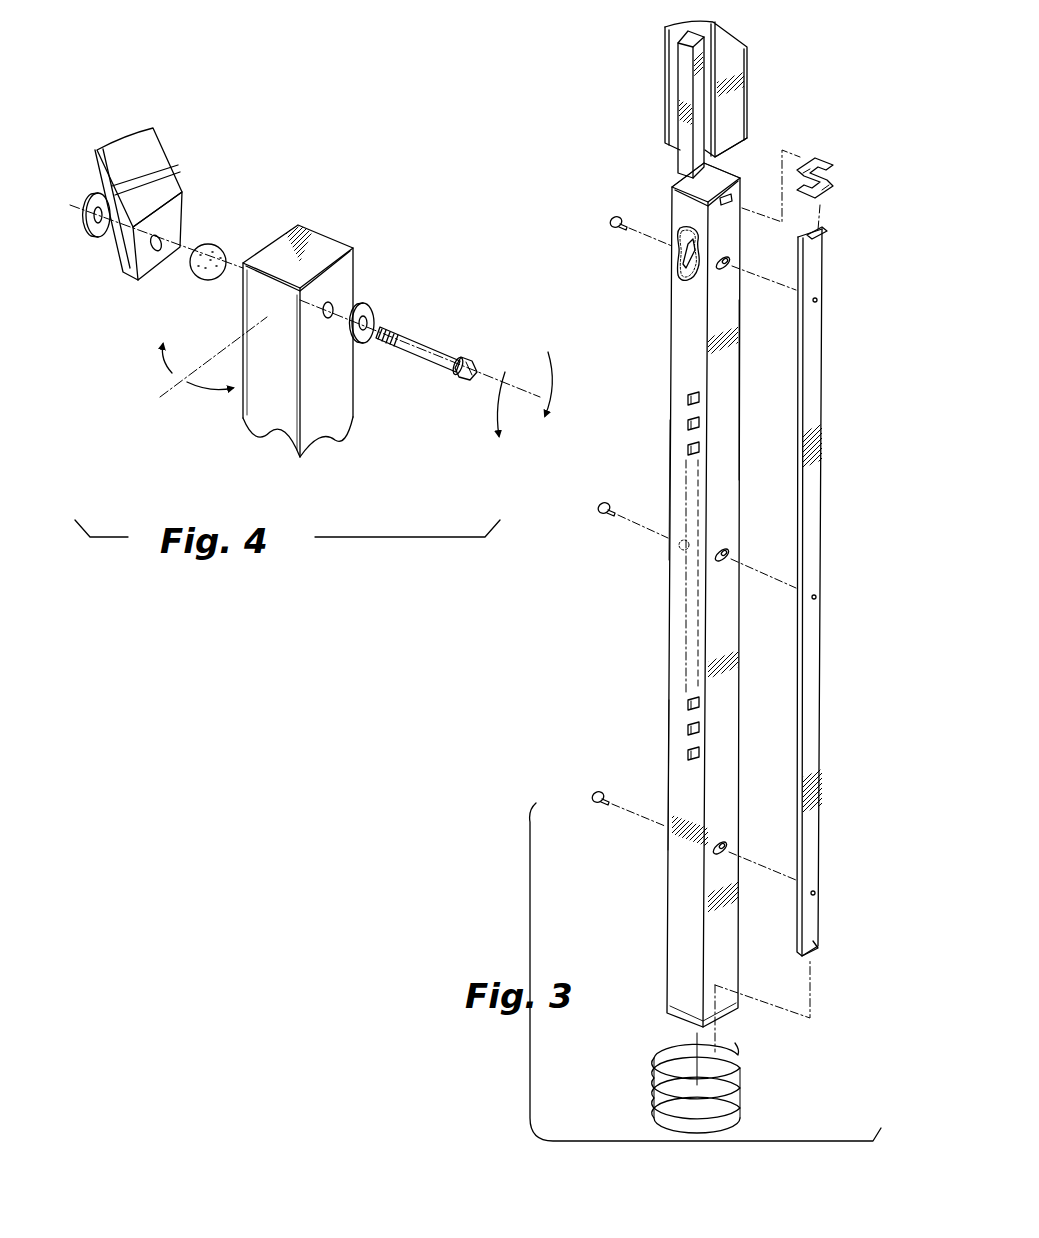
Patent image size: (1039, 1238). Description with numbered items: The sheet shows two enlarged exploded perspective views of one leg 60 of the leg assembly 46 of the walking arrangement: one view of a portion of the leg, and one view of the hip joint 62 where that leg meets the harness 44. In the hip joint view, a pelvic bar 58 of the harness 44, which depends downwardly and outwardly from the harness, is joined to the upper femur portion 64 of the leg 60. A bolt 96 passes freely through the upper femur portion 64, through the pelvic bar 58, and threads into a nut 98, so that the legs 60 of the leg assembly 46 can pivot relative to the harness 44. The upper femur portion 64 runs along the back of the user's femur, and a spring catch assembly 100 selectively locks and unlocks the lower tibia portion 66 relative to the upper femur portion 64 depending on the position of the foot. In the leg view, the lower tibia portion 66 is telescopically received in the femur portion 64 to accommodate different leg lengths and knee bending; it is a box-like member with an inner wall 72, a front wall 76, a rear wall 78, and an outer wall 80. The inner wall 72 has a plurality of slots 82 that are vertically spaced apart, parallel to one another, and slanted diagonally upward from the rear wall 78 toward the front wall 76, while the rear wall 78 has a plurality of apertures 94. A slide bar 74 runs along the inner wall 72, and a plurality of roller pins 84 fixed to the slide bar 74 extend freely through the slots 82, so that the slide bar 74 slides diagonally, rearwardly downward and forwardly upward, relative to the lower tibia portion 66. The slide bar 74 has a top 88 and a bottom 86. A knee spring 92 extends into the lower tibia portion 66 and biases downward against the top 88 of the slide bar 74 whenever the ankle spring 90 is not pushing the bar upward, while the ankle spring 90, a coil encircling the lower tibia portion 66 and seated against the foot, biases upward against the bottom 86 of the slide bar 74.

In FIG. 4, the harness 44 is at (184, 226).
In FIG. 4, the pelvic bar 58 is at (138, 204).
In FIG. 4, the nut 98 is at (96, 240).
In FIG. 4, the hip joint 62 is at (344, 235).
In FIG. 4, the leg assembly 46 is at (243, 418).
In FIG. 3, the leg 60 is at (657, 105).
In FIG. 4, the leg 60 is at (298, 341).
In FIG. 3, the upper femur portion 64 is at (672, 128).
In FIG. 4, the upper femur portion 64 is at (298, 341).
In FIG. 4, the bolt 96 is at (418, 347).
In FIG. 3, the spring catch assembly 100 is at (688, 72).
In FIG. 3, the front wall 76 is at (725, 181).
In FIG. 3, the knee spring 92 is at (855, 233).
In FIG. 3, the top 88 is at (818, 236).
In FIG. 3, the roller pin 84 is at (614, 232).
In FIG. 3, the slot 82 is at (727, 271).
In FIG. 3, the outer wall 80 is at (672, 365).
In FIG. 3, the inner wall 72 is at (742, 393).
In FIG. 3, the lower tibia portion 66 is at (671, 490).
In FIG. 3, the slide bar 74 is at (818, 521).
In FIG. 3, the aperture 94 is at (680, 700).
In FIG. 3, the rear wall 78 is at (675, 781).
In FIG. 3, the bottom 86 is at (815, 949).
In FIG. 3, the ankle spring 90 is at (659, 1062).